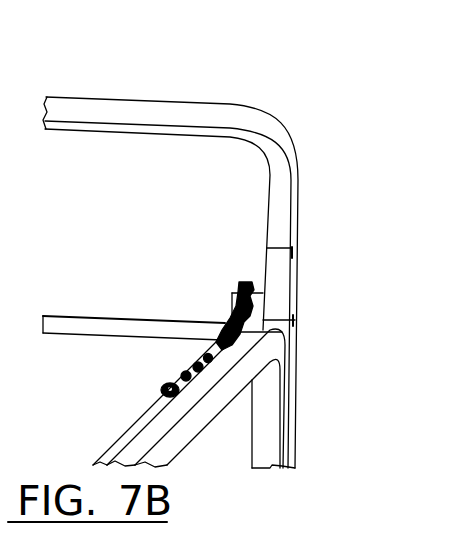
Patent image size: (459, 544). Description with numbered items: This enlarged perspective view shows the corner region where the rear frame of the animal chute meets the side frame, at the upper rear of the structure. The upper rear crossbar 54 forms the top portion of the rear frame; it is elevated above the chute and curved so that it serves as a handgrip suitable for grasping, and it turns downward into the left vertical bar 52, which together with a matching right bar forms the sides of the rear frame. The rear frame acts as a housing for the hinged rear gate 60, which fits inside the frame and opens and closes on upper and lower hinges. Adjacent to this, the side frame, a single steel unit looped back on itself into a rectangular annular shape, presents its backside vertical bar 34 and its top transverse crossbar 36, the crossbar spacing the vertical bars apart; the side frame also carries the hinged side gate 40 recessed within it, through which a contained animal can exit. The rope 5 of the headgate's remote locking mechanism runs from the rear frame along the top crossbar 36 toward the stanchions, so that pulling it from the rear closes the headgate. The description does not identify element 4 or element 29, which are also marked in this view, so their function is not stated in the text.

The upper rear crossbar 54 is at (155, 100).
The frame joint assembly 4 is at (232, 292).
The hinged rear gate 60 is at (113, 317).
The left vertical bar 52 is at (287, 331).
The rivets 29 is at (195, 362).
The rope 5 is at (138, 418).
The hinged side gate 40 is at (240, 362).
The top transverse crossbar 36 is at (205, 418).
The backside vertical bar 34 is at (270, 413).